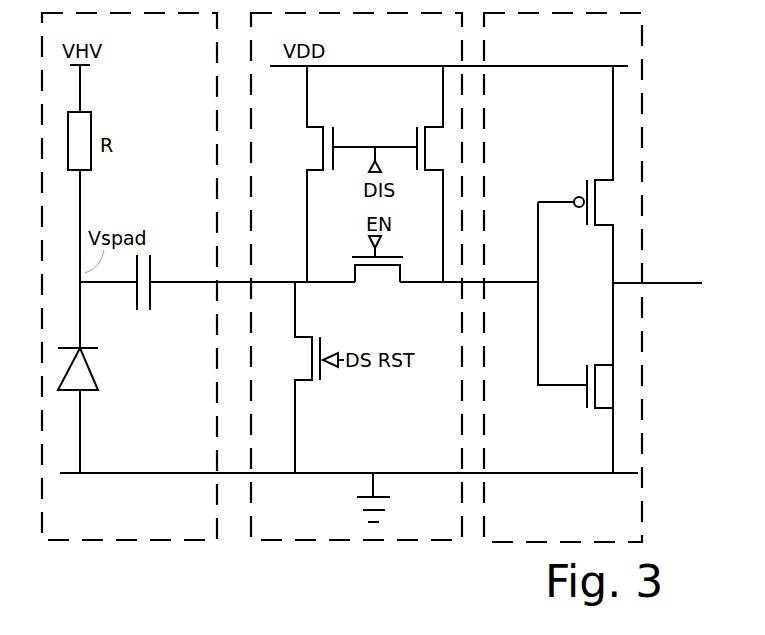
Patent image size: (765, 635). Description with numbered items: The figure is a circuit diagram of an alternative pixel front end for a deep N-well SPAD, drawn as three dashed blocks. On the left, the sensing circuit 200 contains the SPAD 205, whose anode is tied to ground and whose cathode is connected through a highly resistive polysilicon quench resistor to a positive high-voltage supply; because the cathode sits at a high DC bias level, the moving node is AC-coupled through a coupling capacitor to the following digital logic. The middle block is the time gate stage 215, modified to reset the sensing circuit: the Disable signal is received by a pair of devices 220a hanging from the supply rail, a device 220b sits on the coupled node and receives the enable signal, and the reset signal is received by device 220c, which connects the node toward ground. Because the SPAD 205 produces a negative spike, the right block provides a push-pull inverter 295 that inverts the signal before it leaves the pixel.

The sensing circuit 200 is at (129, 276).
The SPAD 205 is at (100, 410).
The time gate stage 215 is at (356, 276).
The pair of devices 220a is at (377, 174).
The device 220b is at (378, 272).
The device 220c is at (320, 377).
The push-pull inverter 295 is at (563, 277).